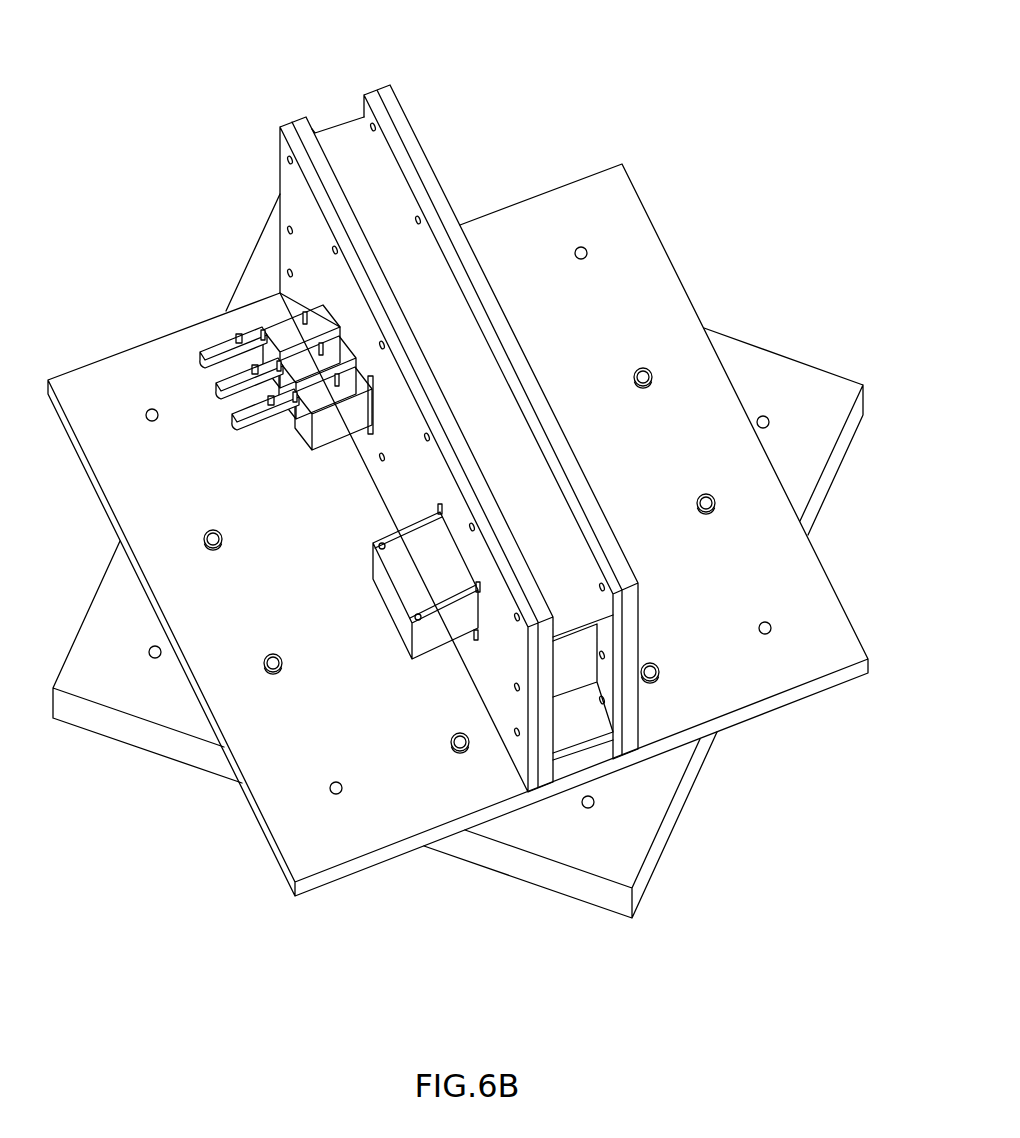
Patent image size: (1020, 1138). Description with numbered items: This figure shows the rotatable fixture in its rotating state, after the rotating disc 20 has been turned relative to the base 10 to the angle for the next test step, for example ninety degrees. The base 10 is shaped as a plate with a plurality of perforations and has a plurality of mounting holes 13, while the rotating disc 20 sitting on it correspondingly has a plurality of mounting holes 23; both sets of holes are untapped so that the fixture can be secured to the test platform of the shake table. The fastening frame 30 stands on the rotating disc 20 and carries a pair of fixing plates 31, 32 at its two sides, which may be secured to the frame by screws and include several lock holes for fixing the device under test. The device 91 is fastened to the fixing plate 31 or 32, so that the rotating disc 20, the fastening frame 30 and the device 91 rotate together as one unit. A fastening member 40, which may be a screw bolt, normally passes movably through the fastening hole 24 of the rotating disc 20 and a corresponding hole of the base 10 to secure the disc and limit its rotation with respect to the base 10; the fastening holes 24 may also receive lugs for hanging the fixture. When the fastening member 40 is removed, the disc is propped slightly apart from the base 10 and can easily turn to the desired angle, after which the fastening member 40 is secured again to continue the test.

The base 10 is at (838, 468).
The mounting holes 13 is at (770, 422).
The rotating disc 20 is at (696, 300).
The mounting holes 23 is at (581, 246).
The fastening hole 24 is at (634, 379).
The fastening frame 30 is at (297, 115).
The fixing plate 31 is at (380, 88).
The fixing plate 32 is at (280, 126).
The fastening member 40 is at (645, 368).
The device 91 is at (388, 598).